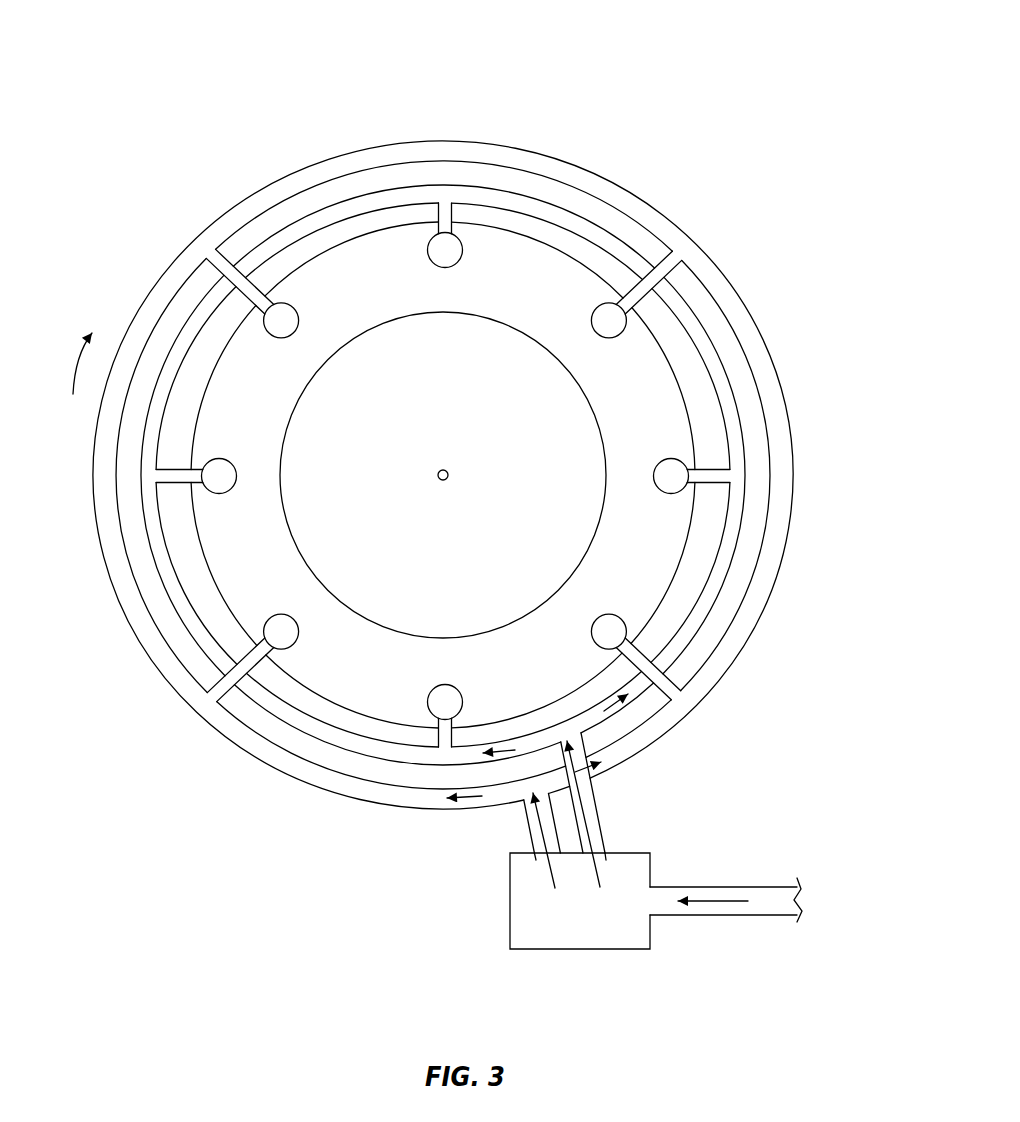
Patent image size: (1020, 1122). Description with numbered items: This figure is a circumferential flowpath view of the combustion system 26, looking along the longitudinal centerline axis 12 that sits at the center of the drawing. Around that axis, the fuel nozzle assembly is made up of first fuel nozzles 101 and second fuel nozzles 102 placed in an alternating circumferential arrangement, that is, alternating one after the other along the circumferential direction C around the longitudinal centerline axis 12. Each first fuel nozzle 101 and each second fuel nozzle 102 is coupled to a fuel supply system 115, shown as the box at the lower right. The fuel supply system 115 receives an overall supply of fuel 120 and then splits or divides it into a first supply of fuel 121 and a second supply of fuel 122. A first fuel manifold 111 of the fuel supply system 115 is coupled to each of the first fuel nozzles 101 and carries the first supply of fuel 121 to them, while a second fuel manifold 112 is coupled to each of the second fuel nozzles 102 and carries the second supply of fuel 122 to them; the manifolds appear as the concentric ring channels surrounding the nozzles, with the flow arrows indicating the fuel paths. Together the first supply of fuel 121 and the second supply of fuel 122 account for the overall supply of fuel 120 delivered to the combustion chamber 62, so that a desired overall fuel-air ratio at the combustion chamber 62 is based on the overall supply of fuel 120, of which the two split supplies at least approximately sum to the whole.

The combustion system 26 is at (722, 67).
The combustion chamber 62 is at (372, 304).
The longitudinal centerline axis 12 is at (451, 470).
The first fuel nozzle 101 is at (439, 197).
The second fuel nozzle 102 is at (243, 248).
The first fuel manifold 111 is at (527, 207).
The second fuel manifold 112 is at (652, 217).
The fuel supply system 115 is at (590, 950).
The overall supply of fuel 120 is at (722, 893).
The first supply of fuel 121 is at (600, 866).
The second supply of fuel 122 is at (550, 874).
The circumferential direction C is at (77, 375).